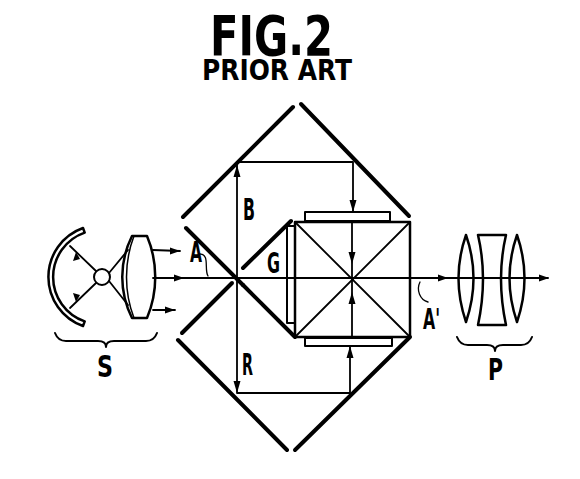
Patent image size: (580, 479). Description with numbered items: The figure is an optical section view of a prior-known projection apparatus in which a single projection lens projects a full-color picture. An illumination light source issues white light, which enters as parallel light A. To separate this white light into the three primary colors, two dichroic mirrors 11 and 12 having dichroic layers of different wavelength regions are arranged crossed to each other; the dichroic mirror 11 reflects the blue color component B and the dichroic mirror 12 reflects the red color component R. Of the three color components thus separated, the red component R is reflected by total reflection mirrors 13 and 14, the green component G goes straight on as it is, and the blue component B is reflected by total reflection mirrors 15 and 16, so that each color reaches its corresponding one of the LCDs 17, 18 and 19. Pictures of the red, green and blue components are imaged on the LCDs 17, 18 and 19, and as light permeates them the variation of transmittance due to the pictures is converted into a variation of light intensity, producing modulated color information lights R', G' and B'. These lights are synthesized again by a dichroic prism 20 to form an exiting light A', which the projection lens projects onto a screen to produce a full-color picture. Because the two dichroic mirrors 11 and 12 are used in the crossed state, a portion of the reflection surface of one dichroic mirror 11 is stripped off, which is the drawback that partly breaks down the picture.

The dichroic mirror 11 is at (179, 340).
The dichroic mirror 12 is at (187, 229).
The total reflection mirror 13 is at (260, 423).
The total reflection mirror 14 is at (327, 420).
The total reflection mirror 15 is at (213, 192).
The total reflection mirror 16 is at (337, 137).
The LCD 17 is at (380, 341).
The LCD 18 is at (270, 303).
The LCD 19 is at (375, 211).
The dichroic prism 20 is at (395, 257).